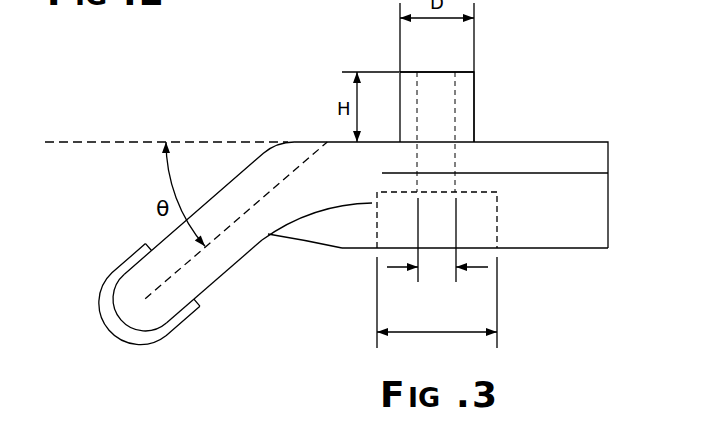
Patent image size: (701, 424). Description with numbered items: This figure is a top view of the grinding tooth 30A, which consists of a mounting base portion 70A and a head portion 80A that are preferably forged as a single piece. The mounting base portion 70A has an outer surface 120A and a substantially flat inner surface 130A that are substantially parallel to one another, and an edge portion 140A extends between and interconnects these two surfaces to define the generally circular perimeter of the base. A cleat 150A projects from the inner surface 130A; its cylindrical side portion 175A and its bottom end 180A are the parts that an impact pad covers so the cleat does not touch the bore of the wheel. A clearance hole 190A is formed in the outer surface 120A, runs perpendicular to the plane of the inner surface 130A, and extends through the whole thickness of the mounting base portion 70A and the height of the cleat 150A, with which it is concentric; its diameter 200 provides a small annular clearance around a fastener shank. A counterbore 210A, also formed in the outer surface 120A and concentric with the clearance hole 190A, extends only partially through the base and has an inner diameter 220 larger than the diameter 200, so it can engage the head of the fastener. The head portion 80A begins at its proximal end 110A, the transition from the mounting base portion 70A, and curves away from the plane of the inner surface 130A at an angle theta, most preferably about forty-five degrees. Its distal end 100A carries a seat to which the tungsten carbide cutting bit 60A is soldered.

The grinding tooth 30A is at (125, 218).
The cutting bit 60A is at (150, 347).
The mounting base portion 70A is at (561, 230).
The head portion 80A is at (213, 265).
The distal end 100A is at (132, 293).
The proximal end 110A is at (268, 207).
The outer surface 120A is at (550, 248).
The inner surface 130A is at (558, 142).
The edge portion 140A is at (646, 168).
The cleat 150A is at (465, 98).
The cylindrical side portion 175A is at (474, 120).
The bottom end 180A is at (412, 72).
The clearance hole 190A is at (455, 90).
The diameter 200 is at (435, 268).
The counterbore 210A is at (494, 214).
The inner diameter 220 is at (437, 332).